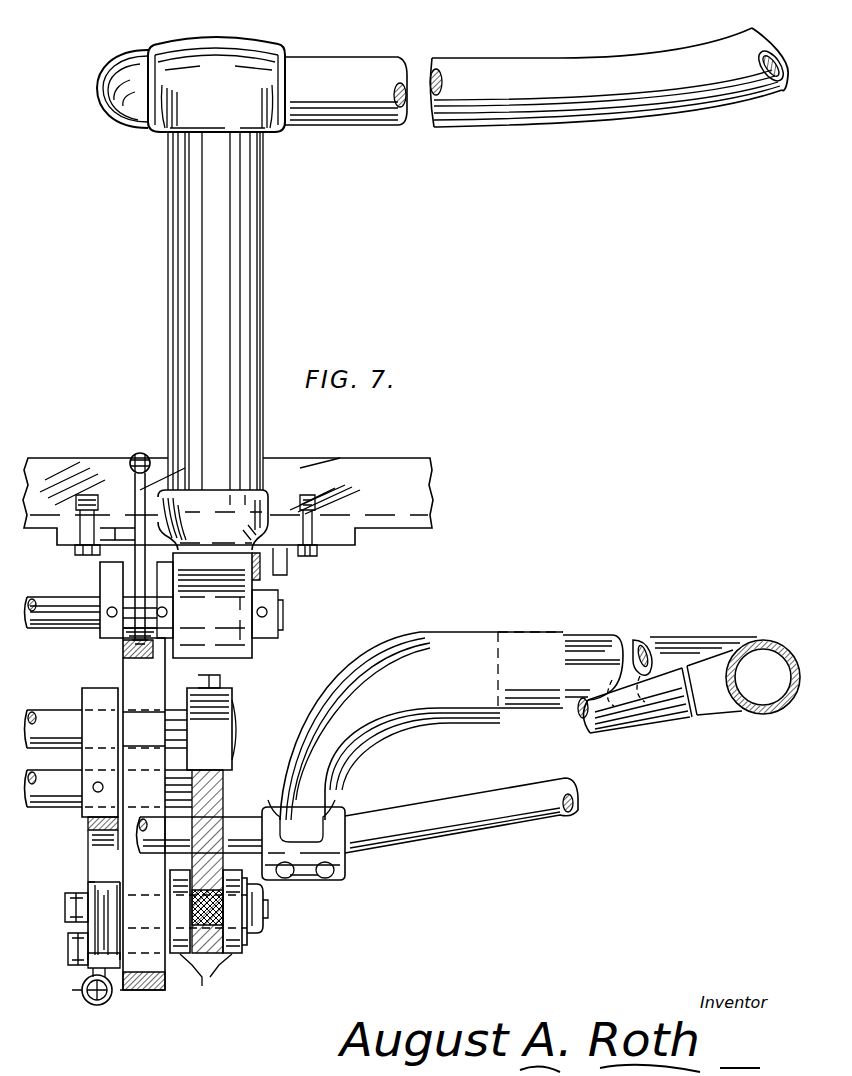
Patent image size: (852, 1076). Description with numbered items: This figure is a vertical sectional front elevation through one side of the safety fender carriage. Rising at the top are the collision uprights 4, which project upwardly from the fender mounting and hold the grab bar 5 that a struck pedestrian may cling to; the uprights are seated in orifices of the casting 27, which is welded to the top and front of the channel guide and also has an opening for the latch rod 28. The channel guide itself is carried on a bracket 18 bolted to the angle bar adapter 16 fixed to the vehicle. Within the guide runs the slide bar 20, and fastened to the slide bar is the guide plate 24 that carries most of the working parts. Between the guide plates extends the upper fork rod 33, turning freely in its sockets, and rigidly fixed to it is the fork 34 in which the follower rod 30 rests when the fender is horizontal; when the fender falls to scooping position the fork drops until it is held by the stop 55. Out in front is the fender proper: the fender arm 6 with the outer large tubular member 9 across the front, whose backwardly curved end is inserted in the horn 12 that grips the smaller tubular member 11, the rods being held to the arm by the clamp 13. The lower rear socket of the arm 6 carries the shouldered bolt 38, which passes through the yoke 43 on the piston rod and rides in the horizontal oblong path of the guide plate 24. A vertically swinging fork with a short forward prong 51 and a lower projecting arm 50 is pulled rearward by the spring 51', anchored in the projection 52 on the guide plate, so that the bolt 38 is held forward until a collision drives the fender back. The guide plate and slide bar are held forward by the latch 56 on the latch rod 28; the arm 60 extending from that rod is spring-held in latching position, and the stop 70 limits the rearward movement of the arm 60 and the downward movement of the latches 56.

The collision uprights 4 is at (264, 320).
The grab bar 5 is at (536, 62).
The fender arms 6 is at (252, 798).
The outer large tubular member 9 is at (703, 638).
The smaller tubular members 11 is at (494, 797).
The horns 12 is at (464, 645).
The clamps 13 is at (226, 792).
The angle bar adapter 16 is at (387, 458).
The brackets 18 is at (280, 550).
The slide bars 20 is at (176, 553).
The guide plates 24 is at (148, 990).
The casting 27 is at (208, 498).
The latch rod 28 is at (70, 630).
The follower rod 30 is at (106, 729).
The upper fork rod 33 is at (82, 806).
The forks 34 is at (90, 700).
The shouldered bolt 38 is at (264, 899).
The yoke 43 is at (208, 938).
The lower projecting arm 50 is at (97, 1006).
The short forward prong 51 is at (57, 924).
The spring 51' is at (57, 988).
The projection 52 is at (110, 998).
The stop 55 is at (100, 823).
The latches 56 is at (100, 574).
The arm 60 is at (134, 489).
The stop 70 is at (117, 538).